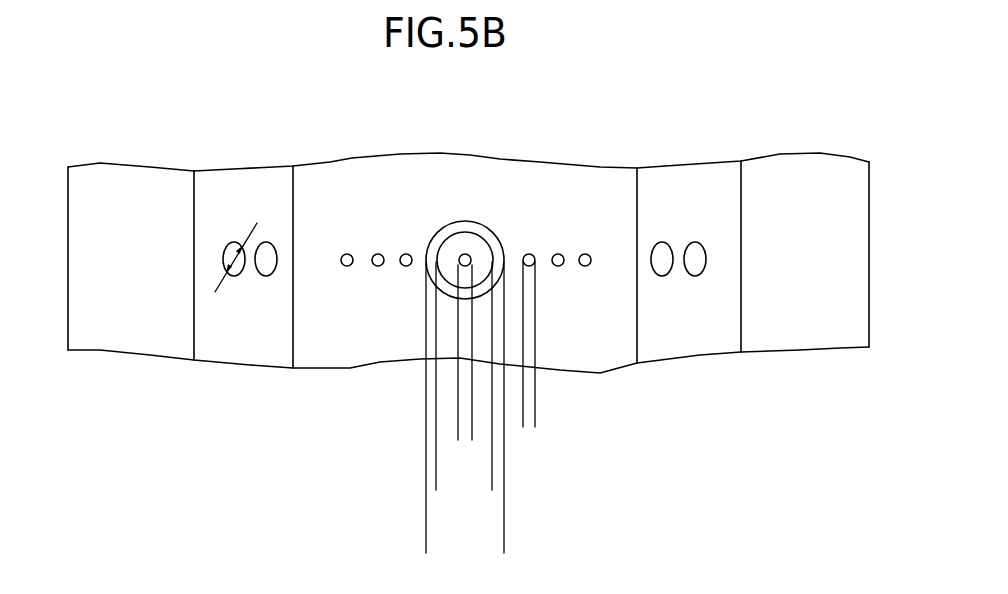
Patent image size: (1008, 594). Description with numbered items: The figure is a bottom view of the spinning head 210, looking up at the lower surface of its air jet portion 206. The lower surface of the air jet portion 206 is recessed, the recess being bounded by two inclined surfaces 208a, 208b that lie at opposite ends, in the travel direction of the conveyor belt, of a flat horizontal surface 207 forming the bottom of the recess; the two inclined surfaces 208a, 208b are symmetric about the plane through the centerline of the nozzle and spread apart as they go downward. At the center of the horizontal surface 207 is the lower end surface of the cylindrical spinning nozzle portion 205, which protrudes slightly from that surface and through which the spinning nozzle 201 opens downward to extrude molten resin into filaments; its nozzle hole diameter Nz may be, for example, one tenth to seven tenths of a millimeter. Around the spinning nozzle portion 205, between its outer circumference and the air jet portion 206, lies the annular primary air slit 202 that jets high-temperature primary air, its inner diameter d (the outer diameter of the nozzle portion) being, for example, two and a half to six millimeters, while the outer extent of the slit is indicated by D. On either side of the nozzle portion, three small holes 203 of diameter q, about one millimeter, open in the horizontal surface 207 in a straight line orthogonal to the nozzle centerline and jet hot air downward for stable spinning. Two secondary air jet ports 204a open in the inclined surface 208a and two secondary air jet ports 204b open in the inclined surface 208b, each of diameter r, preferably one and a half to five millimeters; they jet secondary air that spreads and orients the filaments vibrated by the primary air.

The spinning nozzle 201 is at (463, 264).
The primary air slit 202 is at (445, 228).
The small holes 203 is at (406, 254).
The secondary air jet ports 204a is at (695, 242).
The secondary air jet ports 204b is at (266, 242).
The spinning nozzle portion 205 is at (473, 240).
The air jet portion 206 is at (103, 340).
The horizontal surface 207 is at (612, 353).
The inclined surface 208a is at (700, 343).
The inclined surface 208b is at (262, 348).
The spinning head 210 is at (773, 387).
The outer diameter D is at (504, 542).
The inner diameter of the primary air slit d is at (492, 483).
The nozzle hole diameter Nz is at (488, 423).
The diameter of small hole q is at (502, 417).
The diameter of secondary air jet ports r is at (240, 250).